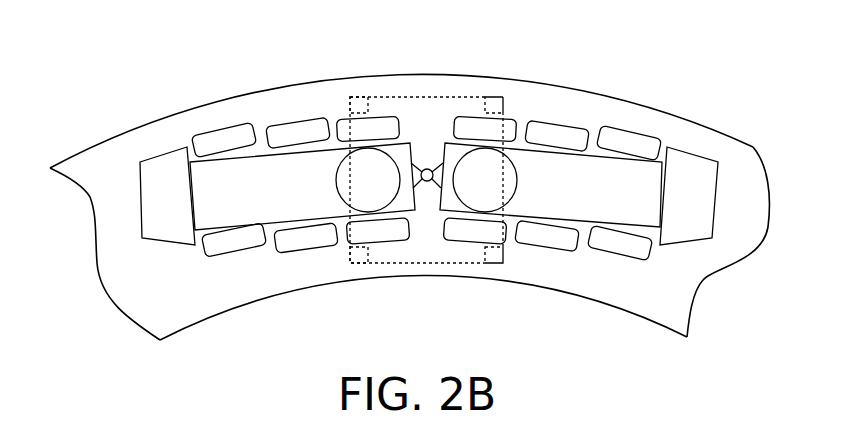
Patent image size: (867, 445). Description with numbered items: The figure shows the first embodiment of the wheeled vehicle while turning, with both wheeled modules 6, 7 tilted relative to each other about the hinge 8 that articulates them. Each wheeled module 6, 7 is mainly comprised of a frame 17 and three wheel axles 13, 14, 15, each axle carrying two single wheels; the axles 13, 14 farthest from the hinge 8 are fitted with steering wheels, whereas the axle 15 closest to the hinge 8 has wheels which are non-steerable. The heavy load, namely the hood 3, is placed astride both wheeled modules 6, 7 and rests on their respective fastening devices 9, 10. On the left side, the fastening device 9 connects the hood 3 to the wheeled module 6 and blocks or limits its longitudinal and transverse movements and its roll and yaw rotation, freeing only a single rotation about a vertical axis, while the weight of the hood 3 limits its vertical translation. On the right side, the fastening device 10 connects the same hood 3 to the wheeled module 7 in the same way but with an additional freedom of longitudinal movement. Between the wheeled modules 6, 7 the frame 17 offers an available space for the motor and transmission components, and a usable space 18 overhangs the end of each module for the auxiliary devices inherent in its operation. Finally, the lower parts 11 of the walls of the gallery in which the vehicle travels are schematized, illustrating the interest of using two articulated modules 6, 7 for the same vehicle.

The hood 3 is at (504, 105).
The wheeled module 6 is at (147, 104).
The wheeled module 7 is at (664, 102).
The hinge 8 is at (426, 168).
The fastening device 9 is at (347, 173).
The fastening device 10 is at (508, 172).
The lower parts of the walls of the gallery 11 is at (316, 82).
The wheel axle 13 is at (217, 249).
The wheel axle 14 is at (289, 249).
The wheel axle 15 is at (364, 238).
The frame 17 is at (257, 175).
The usable space 18 is at (140, 166).